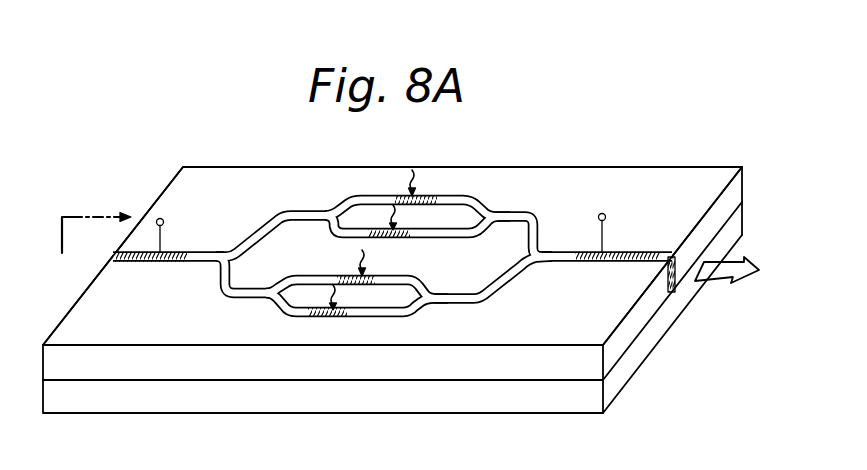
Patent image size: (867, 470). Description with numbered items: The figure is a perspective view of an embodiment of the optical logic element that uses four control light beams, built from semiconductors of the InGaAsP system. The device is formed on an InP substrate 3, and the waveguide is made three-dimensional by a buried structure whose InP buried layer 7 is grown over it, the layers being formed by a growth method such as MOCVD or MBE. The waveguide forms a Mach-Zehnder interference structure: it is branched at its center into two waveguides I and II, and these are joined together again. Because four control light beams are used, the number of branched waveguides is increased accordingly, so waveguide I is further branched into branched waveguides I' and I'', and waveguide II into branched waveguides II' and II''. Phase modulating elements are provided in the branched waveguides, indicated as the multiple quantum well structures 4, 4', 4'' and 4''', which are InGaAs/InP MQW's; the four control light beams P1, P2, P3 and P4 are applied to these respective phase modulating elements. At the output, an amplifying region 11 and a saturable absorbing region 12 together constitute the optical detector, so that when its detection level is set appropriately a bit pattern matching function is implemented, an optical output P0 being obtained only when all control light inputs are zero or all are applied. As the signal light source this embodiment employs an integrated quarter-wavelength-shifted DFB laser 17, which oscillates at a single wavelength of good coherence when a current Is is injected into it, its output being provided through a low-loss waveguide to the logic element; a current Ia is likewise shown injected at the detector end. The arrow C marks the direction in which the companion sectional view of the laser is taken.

The InP substrate 3 is at (545, 400).
The InP buried layer 7 is at (495, 371).
The integrated λ/4-shifted DFB laser 17 is at (140, 261).
The amplifying region 11 is at (590, 262).
The saturable absorbing region 12 is at (630, 261).
The multiple quantum well structure 4 is at (404, 185).
The multiple quantum well structure 4' is at (381, 220).
The phase modulating element 4'' is at (341, 265).
The phase modulating element 4''' is at (339, 326).
The branched waveguide I is at (272, 225).
The branched waveguide I' is at (430, 218).
The branched waveguide I'' is at (396, 233).
The branched waveguide II is at (222, 290).
The branched waveguide II' is at (348, 280).
The branched waveguide II'' is at (387, 300).
The control light beam P1 is at (427, 182).
The control light beam P2 is at (408, 219).
The control light beam P3 is at (376, 263).
The control light beam P4 is at (349, 296).
The current Is is at (175, 233).
The output current Ia is at (615, 231).
The arrow C is at (96, 218).
The output light P0 is at (732, 283).